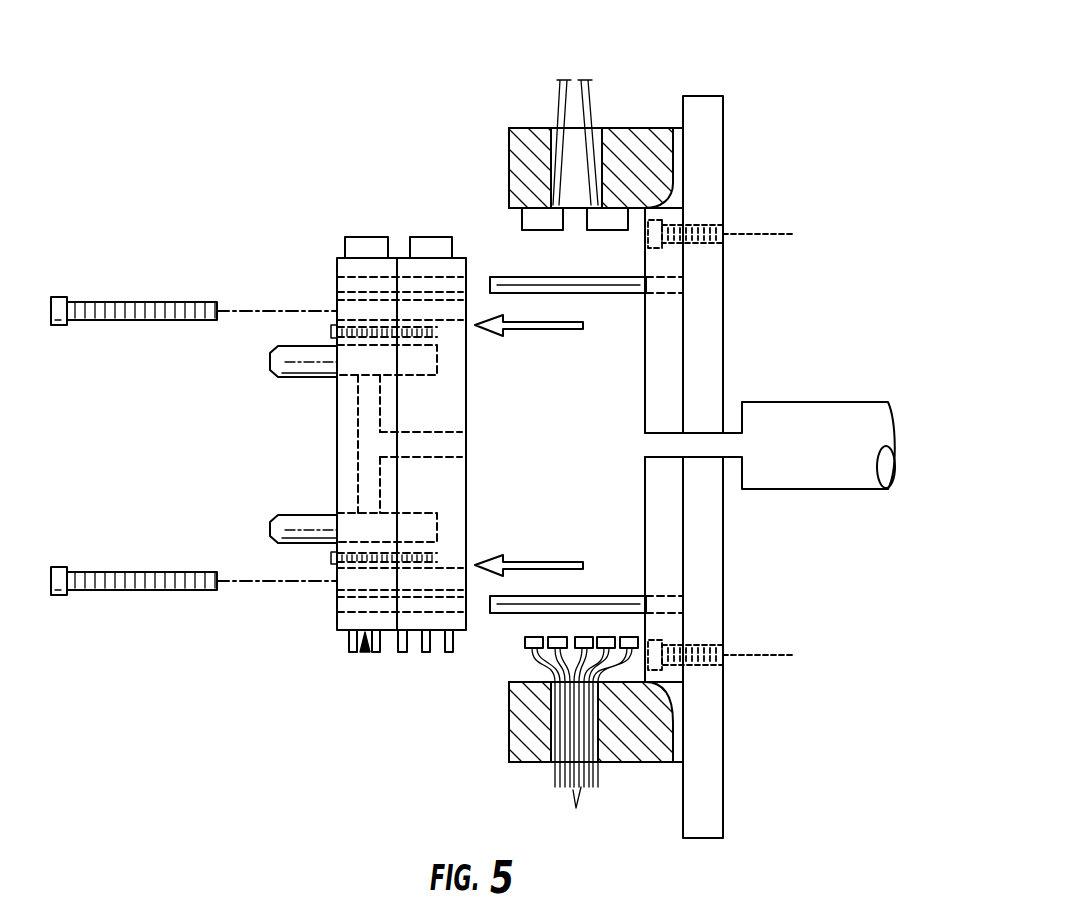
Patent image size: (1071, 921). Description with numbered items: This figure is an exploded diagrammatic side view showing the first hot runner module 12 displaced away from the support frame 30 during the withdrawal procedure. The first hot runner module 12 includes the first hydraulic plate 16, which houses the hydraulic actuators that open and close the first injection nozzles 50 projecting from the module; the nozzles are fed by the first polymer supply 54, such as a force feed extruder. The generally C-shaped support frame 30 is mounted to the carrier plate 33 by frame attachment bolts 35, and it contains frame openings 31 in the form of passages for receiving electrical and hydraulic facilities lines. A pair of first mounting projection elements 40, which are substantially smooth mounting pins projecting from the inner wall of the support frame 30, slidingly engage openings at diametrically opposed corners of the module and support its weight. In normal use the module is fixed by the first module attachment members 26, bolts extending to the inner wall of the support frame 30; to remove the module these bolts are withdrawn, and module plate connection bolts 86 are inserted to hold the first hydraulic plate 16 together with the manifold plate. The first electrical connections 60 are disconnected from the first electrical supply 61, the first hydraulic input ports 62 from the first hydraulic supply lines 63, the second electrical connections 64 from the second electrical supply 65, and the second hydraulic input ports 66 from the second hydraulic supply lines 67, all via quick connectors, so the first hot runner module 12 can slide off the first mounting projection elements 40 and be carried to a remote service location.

The first hot runner module 12 is at (365, 652).
The first hydraulic plate 16 is at (466, 385).
The first module attachment members 26 is at (115, 300).
The support frame 30 is at (632, 128).
The frame openings 31 is at (590, 128).
The carrier plate 33 is at (715, 96).
The frame attachment bolts 35 is at (733, 439).
The first mounting projection elements 40 is at (500, 277).
The first injection nozzles 50 is at (293, 377).
The first polymer supply 54 is at (878, 402).
The first electrical connections 60 is at (429, 237).
The first electrical supply 61 is at (630, 220).
The first hydraulic input ports 62 is at (449, 652).
The first hydraulic supply lines 63 is at (630, 683).
The second electrical connections 64 is at (365, 237).
The second electrical supply 65 is at (533, 231).
The second hydraulic input ports 66 is at (349, 641).
The second hydraulic supply lines 67 is at (527, 650).
The module plate connection bolts 86 is at (330, 332).